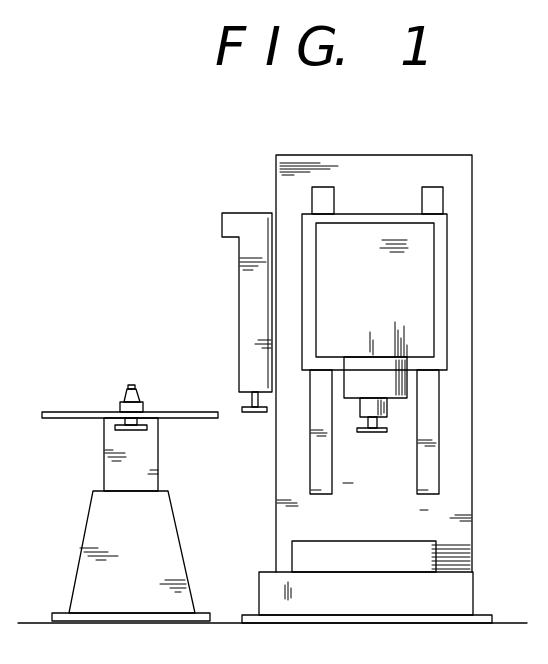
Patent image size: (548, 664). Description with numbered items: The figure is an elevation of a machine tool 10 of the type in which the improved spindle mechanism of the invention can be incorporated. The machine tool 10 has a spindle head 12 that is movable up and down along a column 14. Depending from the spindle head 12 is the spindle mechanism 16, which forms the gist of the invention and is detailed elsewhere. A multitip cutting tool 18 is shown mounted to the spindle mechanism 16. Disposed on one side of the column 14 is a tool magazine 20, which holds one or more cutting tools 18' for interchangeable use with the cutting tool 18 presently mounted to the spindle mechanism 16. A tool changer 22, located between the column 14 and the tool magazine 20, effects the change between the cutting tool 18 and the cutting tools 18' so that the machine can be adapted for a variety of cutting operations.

The machine tool 10 is at (170, 228).
The spindle head 12 is at (425, 302).
The column 14 is at (472, 258).
The spindle mechanism 16 is at (387, 410).
The multitip cutting tool 18 is at (368, 444).
The cutting tool 18' is at (155, 422).
The tool magazine 20 is at (80, 411).
The tool changer 22 is at (242, 328).